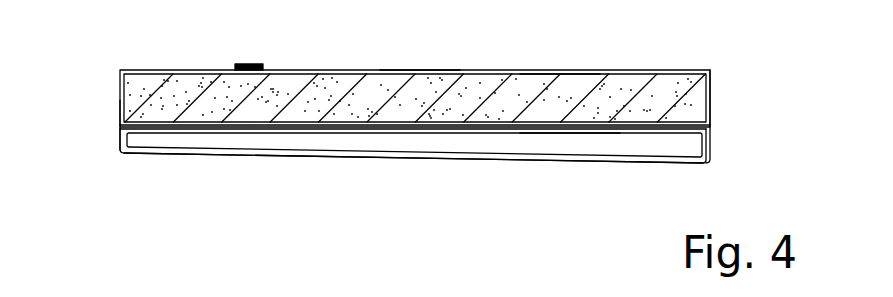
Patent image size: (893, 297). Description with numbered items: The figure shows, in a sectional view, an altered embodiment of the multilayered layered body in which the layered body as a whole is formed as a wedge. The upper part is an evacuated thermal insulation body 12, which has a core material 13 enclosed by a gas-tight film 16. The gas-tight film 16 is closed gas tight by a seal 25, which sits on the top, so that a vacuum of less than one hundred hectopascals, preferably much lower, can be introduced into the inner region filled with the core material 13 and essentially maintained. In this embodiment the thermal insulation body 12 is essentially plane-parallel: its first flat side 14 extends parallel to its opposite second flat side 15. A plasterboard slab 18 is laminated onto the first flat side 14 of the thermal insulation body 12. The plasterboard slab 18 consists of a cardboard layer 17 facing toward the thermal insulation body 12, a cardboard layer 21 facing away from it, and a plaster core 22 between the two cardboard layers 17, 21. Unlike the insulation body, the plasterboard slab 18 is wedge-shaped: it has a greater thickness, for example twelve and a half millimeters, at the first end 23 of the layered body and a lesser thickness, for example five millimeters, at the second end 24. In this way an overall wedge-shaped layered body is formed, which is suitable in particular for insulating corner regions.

The thermal insulation body 12 is at (107, 58).
The core material 13 is at (687, 82).
The first flat side 14 is at (563, 130).
The second flat side 15 is at (560, 71).
The gas-tight film 16 is at (418, 70).
The cardboard layer 17 is at (450, 130).
The plasterboard slab 18 is at (119, 160).
The cardboard layer 21 is at (202, 153).
The plaster core 22 is at (268, 145).
The first end 23 is at (737, 123).
The second end 24 is at (103, 123).
The seal 25 is at (248, 65).